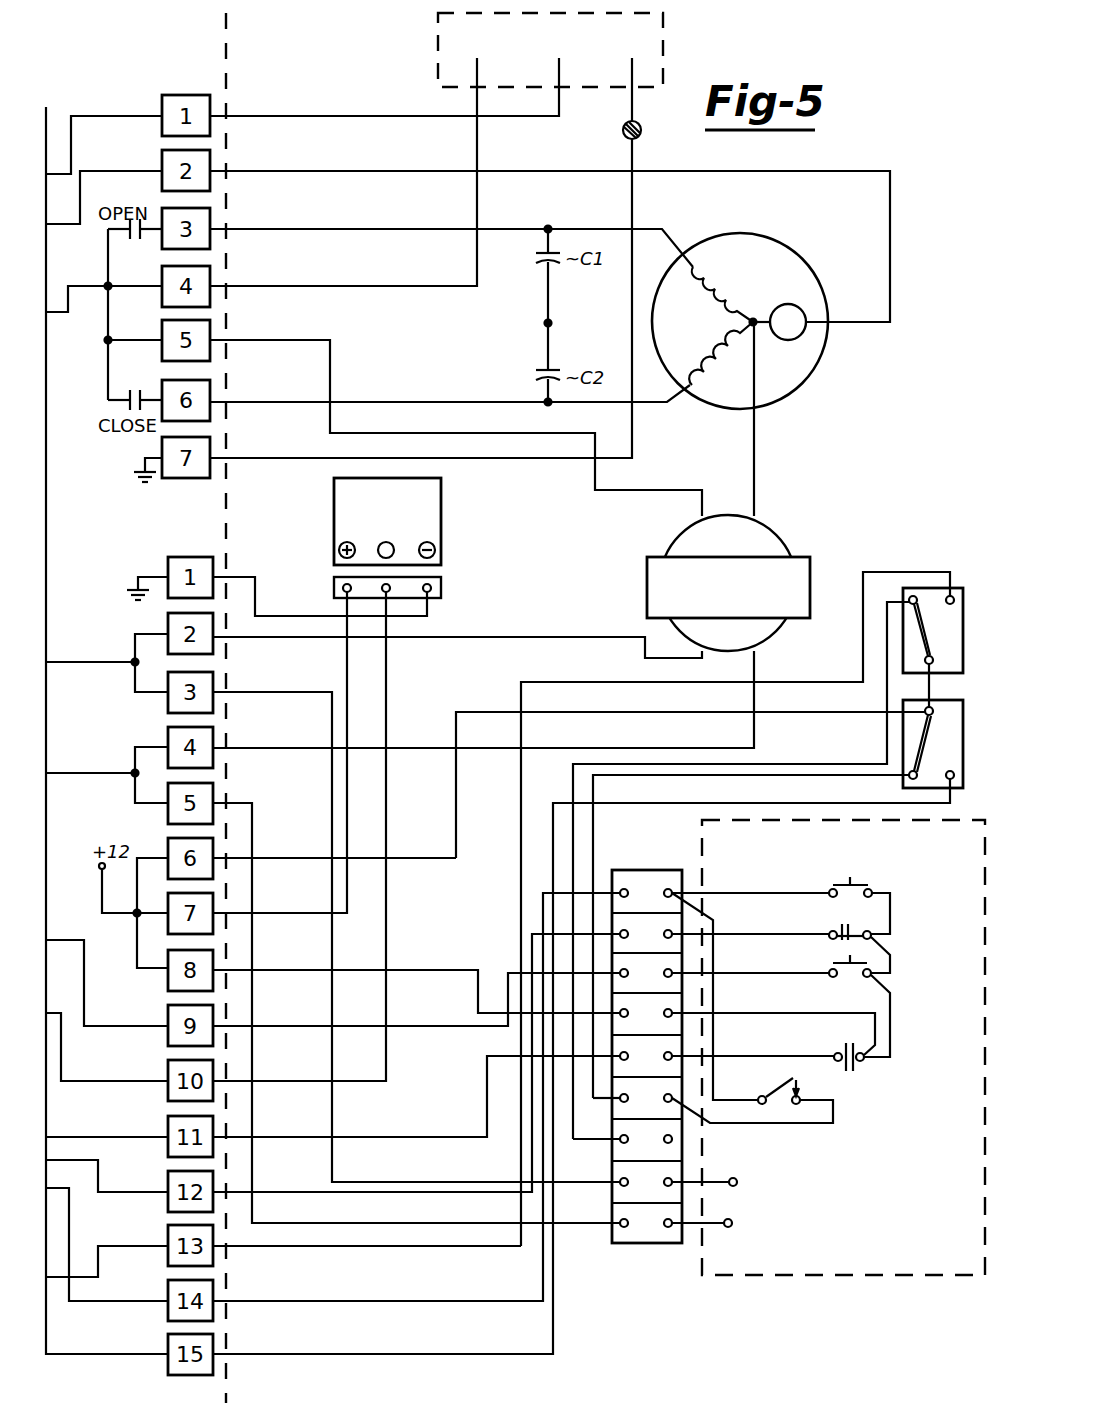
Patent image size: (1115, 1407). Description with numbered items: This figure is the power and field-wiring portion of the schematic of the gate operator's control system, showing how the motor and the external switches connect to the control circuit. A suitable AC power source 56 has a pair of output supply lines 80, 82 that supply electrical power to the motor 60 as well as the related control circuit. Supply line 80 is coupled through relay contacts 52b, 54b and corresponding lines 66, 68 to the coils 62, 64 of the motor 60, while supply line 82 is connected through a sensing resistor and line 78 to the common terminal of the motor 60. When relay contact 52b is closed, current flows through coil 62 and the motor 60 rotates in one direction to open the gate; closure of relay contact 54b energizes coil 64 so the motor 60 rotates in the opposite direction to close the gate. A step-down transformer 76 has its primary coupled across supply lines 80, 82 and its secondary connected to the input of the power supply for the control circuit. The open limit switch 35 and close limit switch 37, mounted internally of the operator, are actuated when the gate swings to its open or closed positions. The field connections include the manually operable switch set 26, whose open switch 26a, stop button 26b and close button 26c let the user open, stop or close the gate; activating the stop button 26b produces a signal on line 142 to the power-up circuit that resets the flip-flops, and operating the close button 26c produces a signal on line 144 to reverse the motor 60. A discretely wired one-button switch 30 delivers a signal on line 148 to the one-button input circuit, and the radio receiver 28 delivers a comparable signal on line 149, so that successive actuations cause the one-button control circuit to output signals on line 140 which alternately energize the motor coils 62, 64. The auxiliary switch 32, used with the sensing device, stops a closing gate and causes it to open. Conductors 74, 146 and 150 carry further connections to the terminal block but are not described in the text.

The AC power source 56 is at (663, 47).
The supply line 80 is at (477, 100).
The supply line 82 is at (536, 116).
The line 78 is at (735, 171).
The line 66 is at (362, 212).
The line 68 is at (422, 372).
The conductor to transformer primary 74 is at (484, 432).
The relay contact 52b is at (130, 238).
The relay contact 54b is at (150, 376).
The motor 60 is at (759, 321).
The coil 62 is at (705, 318).
The coil 64 is at (700, 372).
The step-down transformer 76 is at (800, 560).
The radio receiver 28 is at (443, 522).
The open limit switch 35 is at (906, 618).
The close limit switch 37 is at (908, 728).
The conductor 150 is at (718, 784).
The line 140 is at (600, 889).
The line 142 is at (530, 934).
The line 144 is at (508, 970).
The conductor 146 is at (420, 986).
The line 148 is at (487, 1106).
The line 149 is at (387, 1068).
The manually operable switch set 26 is at (830, 1078).
The open switch 26a is at (855, 884).
The stop button 26b is at (843, 928).
The close button 26c is at (848, 963).
The one-button switch 30 is at (846, 1044).
The auxiliary switch 32 is at (782, 1136).